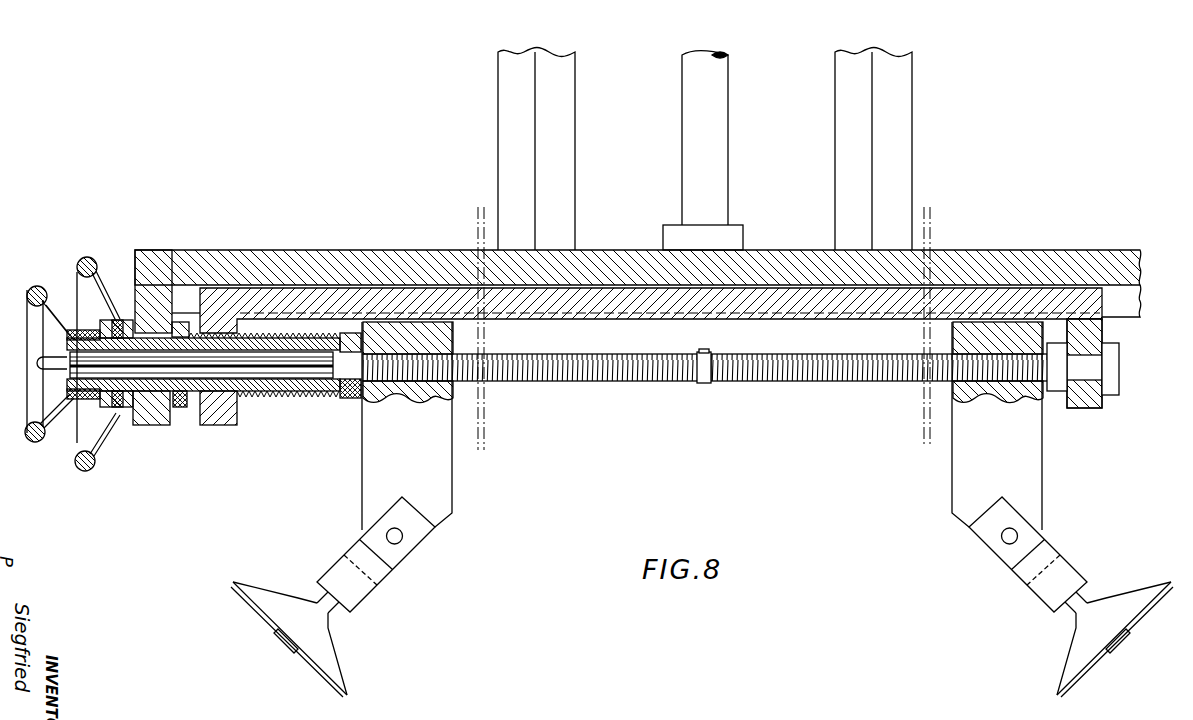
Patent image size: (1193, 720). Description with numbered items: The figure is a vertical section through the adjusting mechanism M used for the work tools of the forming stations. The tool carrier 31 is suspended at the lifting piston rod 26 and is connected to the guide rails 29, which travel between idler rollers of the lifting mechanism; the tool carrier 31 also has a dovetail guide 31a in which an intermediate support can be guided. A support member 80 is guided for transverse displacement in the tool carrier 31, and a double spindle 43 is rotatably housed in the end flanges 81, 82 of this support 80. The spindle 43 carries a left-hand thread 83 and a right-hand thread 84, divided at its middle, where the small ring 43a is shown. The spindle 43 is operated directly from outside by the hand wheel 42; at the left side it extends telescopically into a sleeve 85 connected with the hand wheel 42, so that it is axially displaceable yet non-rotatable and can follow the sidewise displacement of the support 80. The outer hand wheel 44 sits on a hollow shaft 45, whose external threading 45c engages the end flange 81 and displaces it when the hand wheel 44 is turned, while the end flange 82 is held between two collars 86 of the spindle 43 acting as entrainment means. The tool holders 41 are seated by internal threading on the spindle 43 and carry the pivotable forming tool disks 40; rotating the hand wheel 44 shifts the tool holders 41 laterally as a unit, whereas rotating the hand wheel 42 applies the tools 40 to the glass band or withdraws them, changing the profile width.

The adjusting mechanism M is at (165, 247).
The tool carrier 31 is at (314, 257).
The dovetail guide 31a is at (186, 292).
The support member 80 is at (382, 298).
The external threading 45c is at (281, 330).
The hollow shaft 45 is at (271, 398).
The end flange 81 is at (216, 416).
The sleeve 85 is at (310, 398).
The hand wheel 42 is at (35, 445).
The outer hand wheel 44 is at (88, 471).
The guide rails 29 is at (507, 124).
The lifting piston rod 26 is at (688, 124).
The tool holders 41 is at (440, 468).
The left-hand thread 83 is at (627, 384).
The right-hand thread 84 is at (768, 384).
The double spindle 43 is at (702, 385).
The collar ring 43a is at (706, 351).
The end flange 82 is at (1085, 342).
The collars 86 is at (1112, 396).
The shaping tools 40 is at (330, 663).